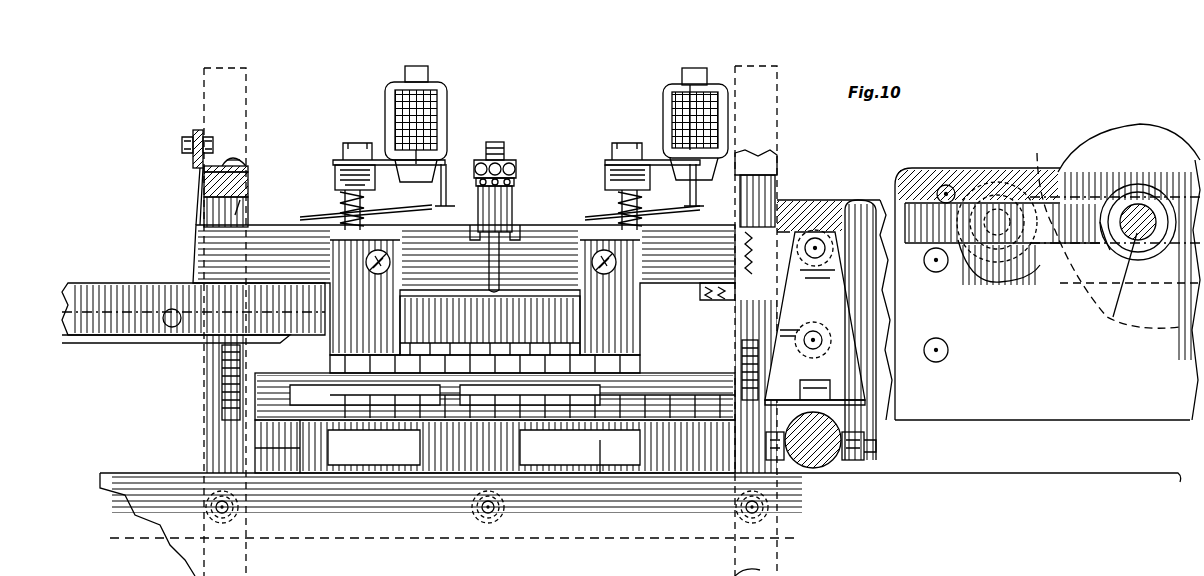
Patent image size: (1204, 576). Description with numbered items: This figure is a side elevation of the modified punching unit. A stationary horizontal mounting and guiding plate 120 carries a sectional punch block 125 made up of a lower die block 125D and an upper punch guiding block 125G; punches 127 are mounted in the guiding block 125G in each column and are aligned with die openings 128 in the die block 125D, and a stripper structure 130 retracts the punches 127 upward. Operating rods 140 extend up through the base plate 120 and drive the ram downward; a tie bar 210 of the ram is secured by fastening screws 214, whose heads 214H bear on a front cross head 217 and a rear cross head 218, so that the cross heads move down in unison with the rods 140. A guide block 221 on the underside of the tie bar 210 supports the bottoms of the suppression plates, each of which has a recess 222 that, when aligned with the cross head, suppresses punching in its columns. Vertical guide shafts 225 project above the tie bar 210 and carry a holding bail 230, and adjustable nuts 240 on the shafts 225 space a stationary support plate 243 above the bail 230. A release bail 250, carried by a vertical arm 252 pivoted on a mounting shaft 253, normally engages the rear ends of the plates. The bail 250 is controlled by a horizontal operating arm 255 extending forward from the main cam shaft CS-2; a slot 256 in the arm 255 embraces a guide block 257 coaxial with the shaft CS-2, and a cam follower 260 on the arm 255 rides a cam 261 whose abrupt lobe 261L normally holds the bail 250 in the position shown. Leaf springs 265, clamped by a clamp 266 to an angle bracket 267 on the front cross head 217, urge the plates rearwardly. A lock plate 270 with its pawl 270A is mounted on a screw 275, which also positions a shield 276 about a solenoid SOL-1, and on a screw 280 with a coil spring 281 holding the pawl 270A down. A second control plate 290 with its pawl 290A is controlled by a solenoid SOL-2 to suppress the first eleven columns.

The mounting and guiding plate 120 is at (358, 540).
The punch block 125 is at (258, 420).
The die block 125D is at (265, 448).
The punch guiding block 125G is at (268, 378).
The punches 127 is at (605, 375).
The die openings 128 is at (598, 472).
The stripper structure 130 is at (505, 318).
The operating rods 140 is at (205, 404).
The tie bar 210 is at (300, 262).
The fastening screws 214 is at (218, 366).
The heads of fastening screws 214H is at (757, 162).
The front cross head 217 is at (250, 192).
The rear cross head 218 is at (770, 187).
The guide block 221 is at (700, 296).
The recess 222 is at (242, 208).
The guide shafts 225 is at (488, 291).
The holding bail 230 is at (478, 193).
The adjustable nuts 240 is at (496, 142).
The support plate 243 is at (512, 165).
The release bail 250 is at (813, 238).
The vertical arm 252 is at (832, 309).
The mounting shaft 253 is at (832, 455).
The operating arm 255 is at (838, 205).
The slot 256 is at (1085, 240).
The guide block 257 is at (1138, 183).
The cam follower 260 is at (988, 190).
The cam 261 is at (1113, 128).
The lobe 261L is at (1040, 170).
The leaf springs 265 is at (198, 200).
The clamp 266 is at (190, 130).
The angle bracket 267 is at (242, 165).
The pawl 270 is at (652, 209).
The pawl 270A is at (600, 212).
The fastening screw 275 is at (352, 143).
The shield 276 is at (672, 95).
The screw 280 is at (628, 162).
The coil spring 281 is at (628, 192).
The control plate 290 is at (375, 203).
The pawl 290A is at (306, 212).
The solenoid SOL-1 is at (692, 100).
The solenoid SOL-2 is at (432, 110).
The main cam shaft CS-2 is at (1127, 291).